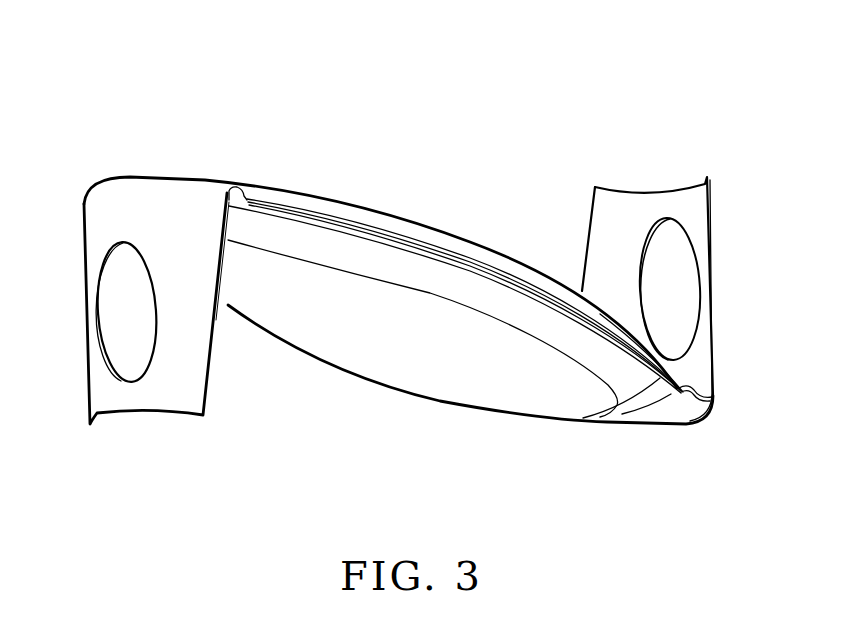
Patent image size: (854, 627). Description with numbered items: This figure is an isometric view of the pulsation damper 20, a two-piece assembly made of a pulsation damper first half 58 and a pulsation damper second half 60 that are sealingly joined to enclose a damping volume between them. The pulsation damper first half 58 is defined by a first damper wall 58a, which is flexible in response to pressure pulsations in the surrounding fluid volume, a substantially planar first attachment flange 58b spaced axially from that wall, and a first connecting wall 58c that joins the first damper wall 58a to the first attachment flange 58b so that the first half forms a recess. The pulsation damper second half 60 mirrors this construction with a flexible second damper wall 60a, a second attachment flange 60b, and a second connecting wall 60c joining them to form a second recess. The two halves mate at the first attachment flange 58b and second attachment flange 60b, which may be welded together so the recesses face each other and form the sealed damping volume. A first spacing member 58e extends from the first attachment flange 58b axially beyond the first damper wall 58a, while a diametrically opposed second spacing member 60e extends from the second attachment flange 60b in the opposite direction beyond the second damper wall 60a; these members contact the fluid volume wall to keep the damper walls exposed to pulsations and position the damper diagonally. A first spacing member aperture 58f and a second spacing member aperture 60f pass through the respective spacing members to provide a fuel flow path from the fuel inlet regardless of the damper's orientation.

The pulsation damper 20 is at (137, 133).
The pulsation damper first half 58 is at (431, 223).
The first damper wall 58a is at (348, 200).
The first attachment flange 58b is at (648, 352).
The first connecting wall 58c is at (603, 317).
The first spacing member 58e is at (708, 182).
The first spacing member aperture 58f is at (660, 250).
The pulsation damper second half 60 is at (387, 355).
The second damper wall 60a is at (503, 383).
The second attachment flange 60b is at (667, 393).
The second connecting wall 60c is at (550, 332).
The second spacing member 60e is at (150, 380).
The second spacing member aperture 60f is at (118, 312).